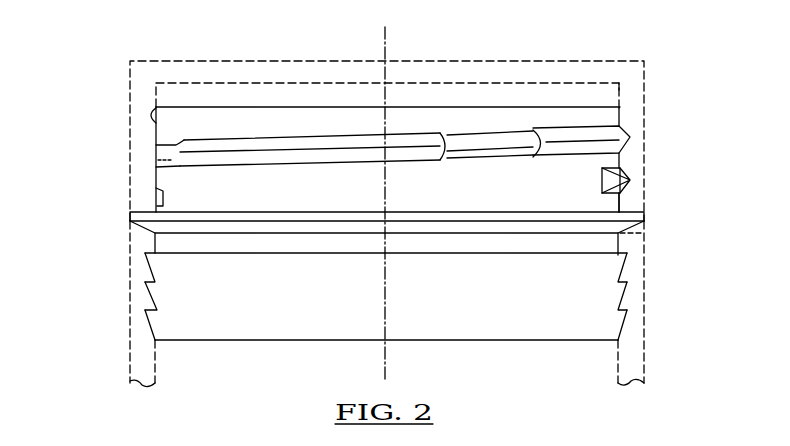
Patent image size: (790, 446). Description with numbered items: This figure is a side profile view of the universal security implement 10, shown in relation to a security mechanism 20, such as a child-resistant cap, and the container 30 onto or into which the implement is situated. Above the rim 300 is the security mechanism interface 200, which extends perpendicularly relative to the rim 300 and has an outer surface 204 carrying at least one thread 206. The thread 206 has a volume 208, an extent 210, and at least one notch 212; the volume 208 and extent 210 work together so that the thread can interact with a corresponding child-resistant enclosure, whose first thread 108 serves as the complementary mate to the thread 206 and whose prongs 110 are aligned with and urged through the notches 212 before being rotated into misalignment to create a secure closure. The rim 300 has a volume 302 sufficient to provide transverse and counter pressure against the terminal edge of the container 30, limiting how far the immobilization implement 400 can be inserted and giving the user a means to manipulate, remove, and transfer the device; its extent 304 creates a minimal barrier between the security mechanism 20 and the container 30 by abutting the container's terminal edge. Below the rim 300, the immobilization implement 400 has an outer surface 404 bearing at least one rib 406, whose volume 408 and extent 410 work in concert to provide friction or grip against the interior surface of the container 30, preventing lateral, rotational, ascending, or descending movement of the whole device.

The universal security implement 10 is at (98, 43).
The security mechanism 20 is at (130, 85).
The container 30 is at (128, 343).
The first thread 108 is at (622, 106).
The prong 110 is at (158, 196).
The security mechanism interface 200 is at (156, 131).
The outer surface 204 is at (155, 177).
The thread 206 is at (632, 137).
The volume 208 is at (687, 175).
The extent 210 is at (687, 207).
The notch 212 is at (488, 133).
The rim 300 is at (130, 214).
The volume 302 is at (118, 247).
The extent 304 is at (687, 254).
The immobilization implement 400 is at (152, 244).
The outer surface 404 is at (180, 246).
The rib 406 is at (623, 297).
The volume 408 is at (687, 324).
The extent 410 is at (687, 353).